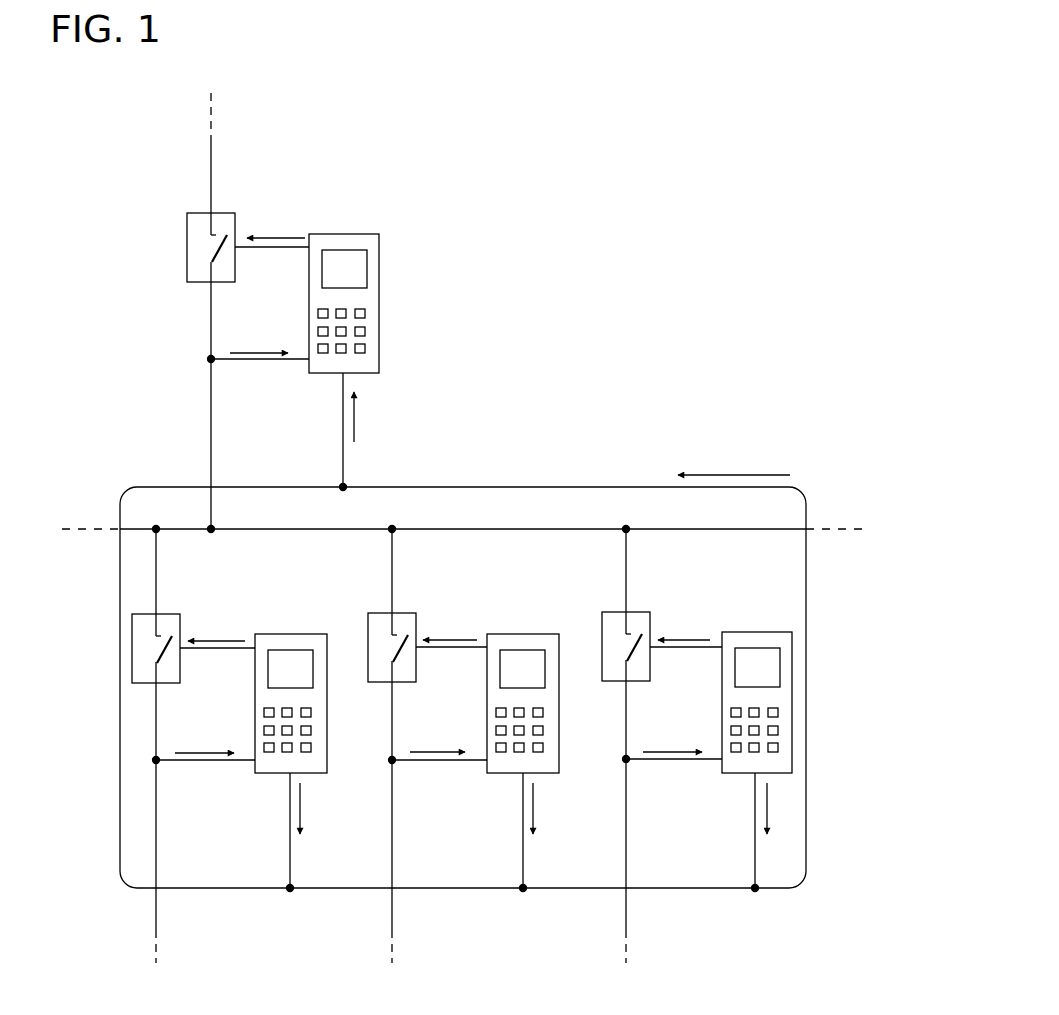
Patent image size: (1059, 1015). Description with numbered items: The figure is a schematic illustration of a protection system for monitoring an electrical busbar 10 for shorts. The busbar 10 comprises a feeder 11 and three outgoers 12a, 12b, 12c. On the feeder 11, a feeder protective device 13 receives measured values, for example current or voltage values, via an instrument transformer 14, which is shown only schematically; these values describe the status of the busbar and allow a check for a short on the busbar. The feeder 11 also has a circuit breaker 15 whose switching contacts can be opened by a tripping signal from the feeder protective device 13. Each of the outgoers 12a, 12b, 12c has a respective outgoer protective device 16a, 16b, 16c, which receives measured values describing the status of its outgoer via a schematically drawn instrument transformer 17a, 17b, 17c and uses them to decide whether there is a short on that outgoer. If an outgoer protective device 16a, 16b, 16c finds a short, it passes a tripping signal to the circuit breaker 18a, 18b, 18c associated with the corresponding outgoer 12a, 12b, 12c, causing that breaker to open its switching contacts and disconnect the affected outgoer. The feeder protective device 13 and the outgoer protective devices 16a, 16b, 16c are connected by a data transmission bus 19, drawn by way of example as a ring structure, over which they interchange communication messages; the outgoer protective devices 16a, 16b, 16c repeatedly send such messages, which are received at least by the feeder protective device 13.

The busbar 10 is at (680, 290).
The feeder 11 is at (160, 272).
The outgoer 12a is at (137, 912).
The outgoer 12b is at (382, 912).
The outgoer 12c is at (617, 911).
The feeder protective device 13 is at (340, 234).
The instrument transformer 14 is at (211, 359).
The circuit breaker 15 is at (222, 213).
The outgoer protective device 16a is at (287, 634).
The outgoer protective device 16b is at (521, 634).
The outgoer protective device 16c is at (757, 632).
The instrument transformer 17a is at (156, 760).
The instrument transformer 17b is at (392, 760).
The instrument transformer 17c is at (626, 759).
The circuit breaker 18a is at (167, 614).
The circuit breaker 18b is at (402, 613).
The circuit breaker 18c is at (637, 612).
The data transmission bus 19 is at (602, 487).